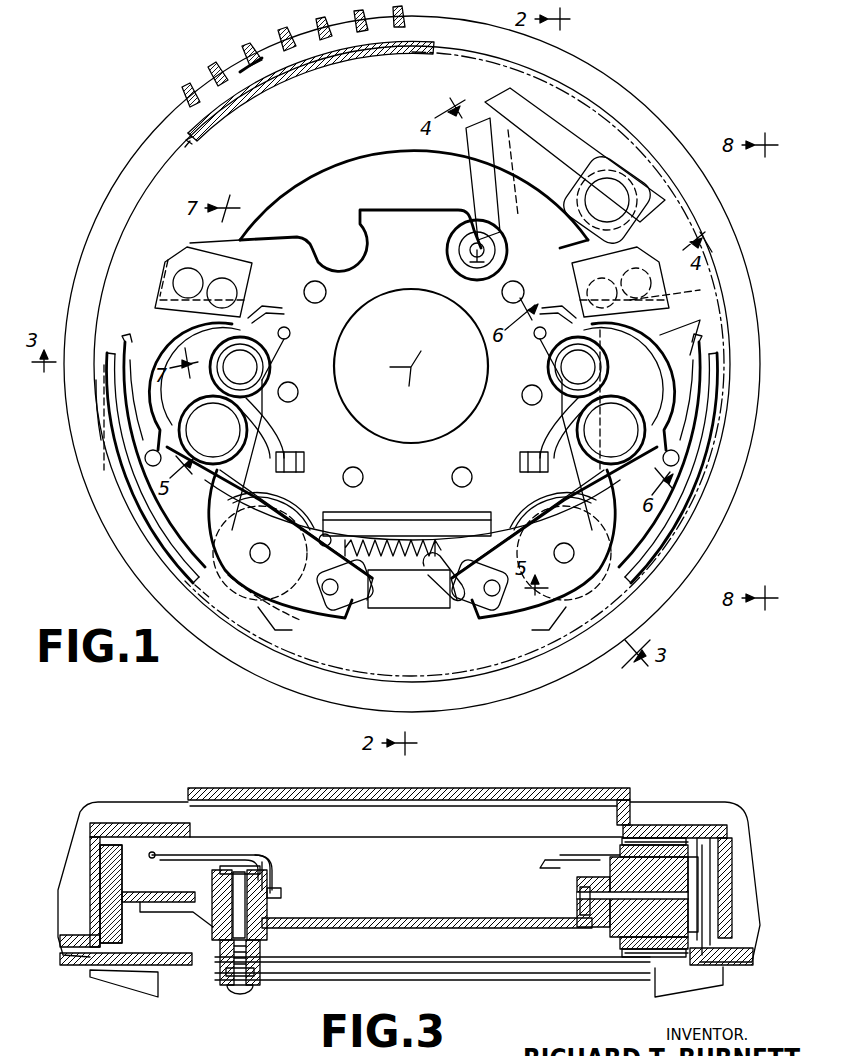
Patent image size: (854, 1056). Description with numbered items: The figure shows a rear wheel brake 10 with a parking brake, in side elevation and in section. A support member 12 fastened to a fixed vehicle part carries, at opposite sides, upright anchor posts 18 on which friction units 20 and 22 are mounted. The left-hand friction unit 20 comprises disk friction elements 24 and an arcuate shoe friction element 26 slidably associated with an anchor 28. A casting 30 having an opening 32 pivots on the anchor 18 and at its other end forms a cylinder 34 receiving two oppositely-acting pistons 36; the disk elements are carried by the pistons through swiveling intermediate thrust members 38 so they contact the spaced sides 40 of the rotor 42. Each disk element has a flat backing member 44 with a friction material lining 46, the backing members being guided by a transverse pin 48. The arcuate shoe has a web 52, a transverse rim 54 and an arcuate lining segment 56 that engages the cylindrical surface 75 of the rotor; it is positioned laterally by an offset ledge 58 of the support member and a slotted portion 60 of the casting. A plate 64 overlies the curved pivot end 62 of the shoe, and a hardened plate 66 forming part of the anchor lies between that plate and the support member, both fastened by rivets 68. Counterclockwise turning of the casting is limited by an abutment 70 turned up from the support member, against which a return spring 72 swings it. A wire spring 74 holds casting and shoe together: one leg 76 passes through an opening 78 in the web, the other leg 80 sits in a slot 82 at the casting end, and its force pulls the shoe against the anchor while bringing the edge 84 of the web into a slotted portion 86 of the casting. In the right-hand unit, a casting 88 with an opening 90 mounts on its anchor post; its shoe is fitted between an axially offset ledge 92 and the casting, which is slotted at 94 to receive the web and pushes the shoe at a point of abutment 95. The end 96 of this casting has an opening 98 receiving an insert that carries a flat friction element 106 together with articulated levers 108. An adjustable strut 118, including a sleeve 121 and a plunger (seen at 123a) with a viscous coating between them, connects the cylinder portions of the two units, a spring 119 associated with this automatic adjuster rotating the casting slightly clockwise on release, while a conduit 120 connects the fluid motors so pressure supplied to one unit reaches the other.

In FIG. 1, the brake 10 is at (180, 95).
In FIG. 1, the support member 12 is at (288, 250).
In FIG. 3, the support member 12 is at (330, 926).
In FIG. 1, the anchor post 18 is at (272, 358).
In FIG. 3, the anchor post 18 is at (222, 962).
In FIG. 1, the friction unit 20 is at (270, 418).
In FIG. 1, the friction unit 22 is at (556, 412).
In FIG. 1, the disk friction element 24 is at (258, 618).
In FIG. 1, the arcuate shoe friction element 26 is at (150, 455).
In FIG. 3, the arcuate shoe friction element 26 is at (138, 890).
In FIG. 1, the anchor 28 is at (248, 258).
In FIG. 1, the casting 30 is at (262, 452).
In FIG. 3, the casting 30 is at (275, 875).
In FIG. 3, the opening 32 is at (258, 866).
In FIG. 1, the cylinder 34 is at (240, 622).
In FIG. 3, the cylinder 34 is at (700, 887).
In FIG. 3, the piston 36 is at (620, 904).
In FIG. 3, the intermediate thrust member 38 is at (650, 845).
In FIG. 1, the side of rotor 40 is at (412, 364).
In FIG. 3, the side of rotor 40 is at (712, 828).
In FIG. 1, the rotor 42 is at (262, 57).
In FIG. 3, the rotor 42 is at (740, 915).
In FIG. 3, the backing member 44 is at (668, 840).
In FIG. 1, the friction material lining 46 is at (330, 600).
In FIG. 3, the friction material lining 46 is at (690, 780).
In FIG. 1, the transverse pin 48 is at (340, 595).
In FIG. 1, the web 52 is at (133, 338).
In FIG. 3, the web 52 is at (152, 892).
In FIG. 1, the rim 54 is at (125, 345).
In FIG. 3, the rim 54 is at (100, 858).
In FIG. 1, the arcuate lining segment 56 is at (112, 385).
In FIG. 3, the arcuate lining segment 56 is at (100, 912).
In FIG. 3, the offset ledge 58 is at (148, 912).
In FIG. 1, the slotted portion 60 is at (170, 505).
In FIG. 1, the curved pivot end 62 is at (165, 266).
In FIG. 1, the plate 64 is at (185, 246).
In FIG. 1, the hardened plate 66 is at (226, 292).
In FIG. 1, the rivet 68 is at (192, 280).
In FIG. 1, the abutment 70 is at (360, 520).
In FIG. 1, the return spring 72 is at (412, 530).
In FIG. 1, the wire spring 74 is at (100, 408).
In FIG. 3, the wire spring 74 is at (213, 858).
In FIG. 1, the cylindrical surface 75 is at (270, 88).
In FIG. 3, the cylindrical surface 75 is at (712, 907).
In FIG. 1, the leg 76 is at (125, 478).
In FIG. 1, the opening 78 is at (130, 495).
In FIG. 1, the leg 80 is at (284, 310).
In FIG. 3, the leg 80 is at (284, 892).
In FIG. 1, the slot 82 is at (290, 333).
In FIG. 1, the edge 84 is at (299, 393).
In FIG. 1, the slotted portion 86 is at (105, 432).
In FIG. 1, the casting 88 is at (548, 458).
In FIG. 1, the opening 90 is at (562, 370).
In FIG. 1, the axially offset ledge 92 is at (705, 318).
In FIG. 1, the slot 94 is at (690, 350).
In FIG. 1, the point of abutment 95 is at (621, 400).
In FIG. 1, the end of casting 96 is at (570, 242).
In FIG. 1, the opening 98 is at (640, 200).
In FIG. 1, the flat friction element 106 is at (565, 130).
In FIG. 1, the articulated lever 108 is at (458, 210).
In FIG. 1, the adjustable strut 118 is at (442, 605).
In FIG. 1, the spring 119 is at (409, 589).
In FIG. 1, the conduit 120 is at (400, 512).
In FIG. 3, the conduit 120 is at (545, 860).
In FIG. 1, the sleeve 121 is at (410, 608).
In FIG. 1, the adjuster lever end 123a is at (318, 615).